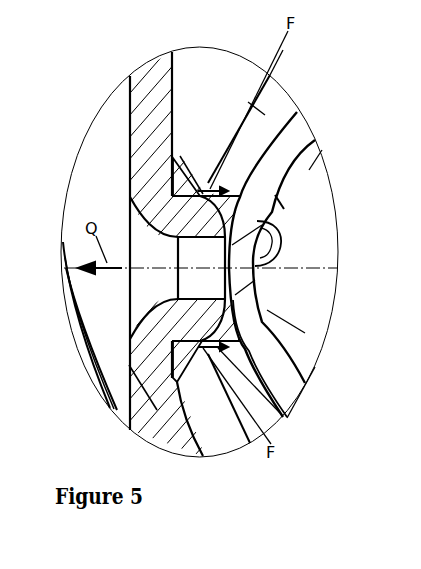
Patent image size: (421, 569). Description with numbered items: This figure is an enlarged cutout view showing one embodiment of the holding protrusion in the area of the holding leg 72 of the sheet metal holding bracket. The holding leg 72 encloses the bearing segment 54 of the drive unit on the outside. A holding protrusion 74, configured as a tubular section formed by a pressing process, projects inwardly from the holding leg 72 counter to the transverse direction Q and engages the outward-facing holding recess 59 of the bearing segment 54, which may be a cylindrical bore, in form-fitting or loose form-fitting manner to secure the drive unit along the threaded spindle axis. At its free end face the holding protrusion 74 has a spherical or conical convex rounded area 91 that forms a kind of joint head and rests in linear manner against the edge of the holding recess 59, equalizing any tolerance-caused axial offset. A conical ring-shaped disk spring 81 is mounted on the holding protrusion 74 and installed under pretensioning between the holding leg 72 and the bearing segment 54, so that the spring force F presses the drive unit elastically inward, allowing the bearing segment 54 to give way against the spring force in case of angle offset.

The holding leg 72 is at (157, 105).
The holding protrusion 74 is at (190, 219).
The conical ring-shaped disk spring 81 is at (211, 180).
The bearing segment 54 is at (258, 127).
The holding recess 59 is at (268, 220).
The convex rounded area 91 is at (258, 229).